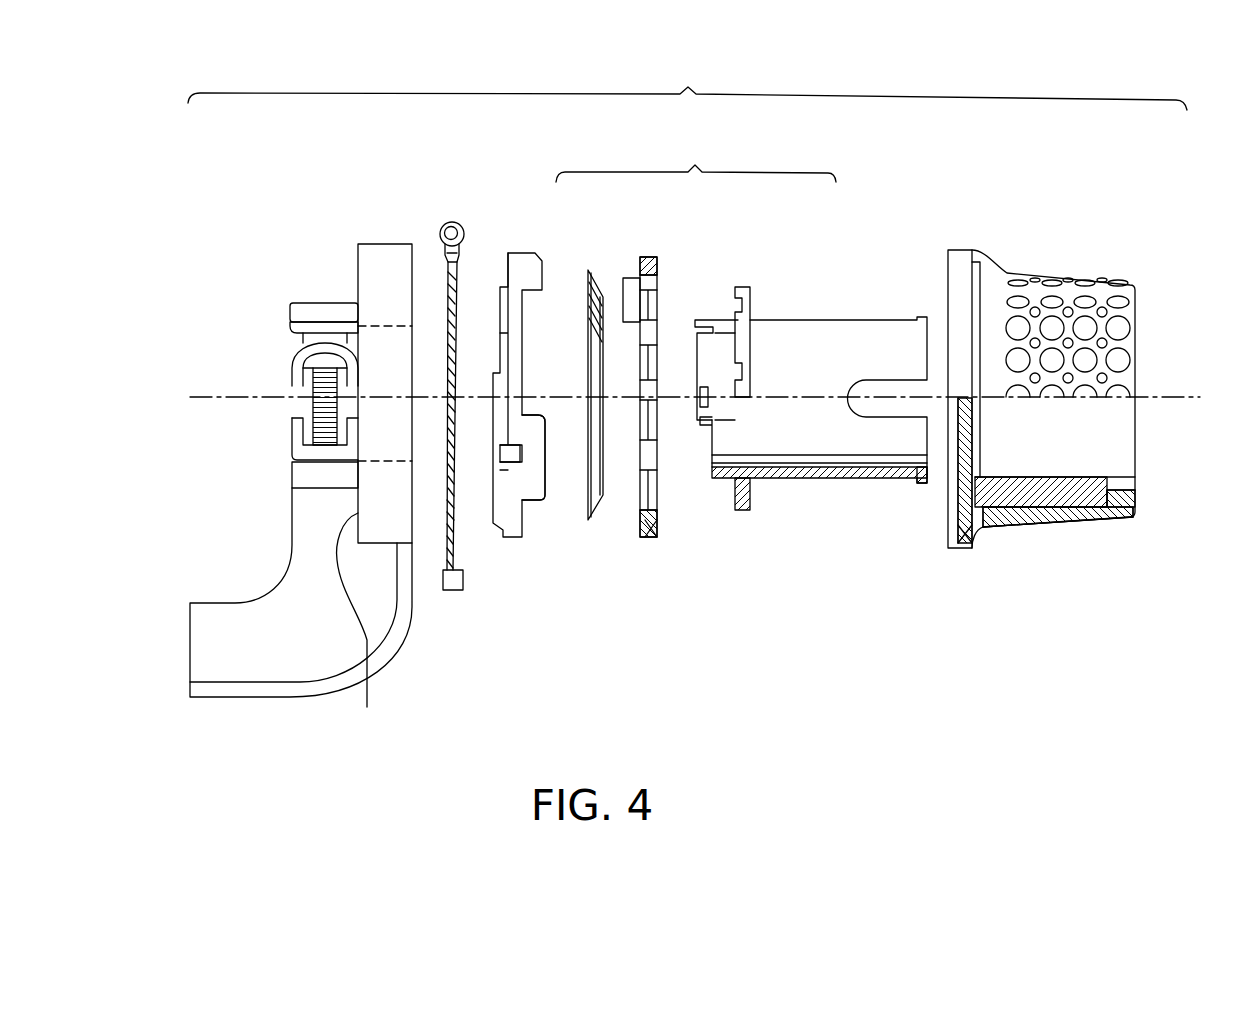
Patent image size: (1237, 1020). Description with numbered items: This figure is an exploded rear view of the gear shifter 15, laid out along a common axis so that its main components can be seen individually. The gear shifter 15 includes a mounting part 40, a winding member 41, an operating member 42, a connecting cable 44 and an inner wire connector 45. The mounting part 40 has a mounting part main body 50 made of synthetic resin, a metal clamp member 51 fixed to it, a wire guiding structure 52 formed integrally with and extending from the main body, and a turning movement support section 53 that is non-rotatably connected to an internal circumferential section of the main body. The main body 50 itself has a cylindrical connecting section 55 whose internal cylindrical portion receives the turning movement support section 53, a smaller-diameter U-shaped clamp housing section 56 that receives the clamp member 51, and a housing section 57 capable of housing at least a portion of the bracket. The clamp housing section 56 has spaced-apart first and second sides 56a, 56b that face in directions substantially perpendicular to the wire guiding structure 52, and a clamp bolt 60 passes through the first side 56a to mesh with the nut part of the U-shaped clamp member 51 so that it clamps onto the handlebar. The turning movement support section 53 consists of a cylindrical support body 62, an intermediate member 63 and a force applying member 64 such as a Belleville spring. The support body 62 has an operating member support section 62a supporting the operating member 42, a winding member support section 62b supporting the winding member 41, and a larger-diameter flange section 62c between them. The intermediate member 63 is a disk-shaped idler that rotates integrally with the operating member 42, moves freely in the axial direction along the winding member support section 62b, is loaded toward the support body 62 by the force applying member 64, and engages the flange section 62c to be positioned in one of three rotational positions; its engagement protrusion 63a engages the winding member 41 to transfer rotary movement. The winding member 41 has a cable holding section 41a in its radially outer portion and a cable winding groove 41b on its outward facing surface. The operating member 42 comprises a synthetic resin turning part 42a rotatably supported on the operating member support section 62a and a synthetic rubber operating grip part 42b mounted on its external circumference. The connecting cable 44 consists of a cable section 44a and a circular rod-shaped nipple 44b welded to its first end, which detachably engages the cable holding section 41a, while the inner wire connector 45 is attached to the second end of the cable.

The gear shifter 15 is at (687, 80).
The mounting part 40 is at (343, 218).
The winding member 41 is at (525, 252).
The cable holding section 41a is at (511, 470).
The cable winding groove 41b is at (503, 417).
The operating member 42 is at (1063, 262).
The turning part 42a is at (1100, 478).
The operating grip part 42b is at (1102, 513).
The connecting cable 44 is at (464, 533).
The cable section 44a is at (458, 490).
The nipple 44b is at (447, 592).
The inner wire connector 45 is at (458, 226).
The mounting part main body 50 is at (388, 243).
The metal clamp member 51 is at (292, 366).
The wire guiding structure 52 is at (318, 698).
The turning movement support section 53 is at (696, 157).
The cylindrical connecting section 55 is at (403, 247).
The U-shaped clamp housing section 56 is at (300, 302).
The first side 56a is at (335, 310).
The second side 56b is at (305, 482).
The housing section 57 is at (368, 707).
The clamp bolt 60 is at (317, 403).
The cylindrical support body 62 is at (785, 307).
The operating member support section 62a is at (848, 323).
The winding member support section 62b is at (703, 318).
The larger-diameter flange section 62c is at (743, 288).
The intermediate member 63 is at (648, 255).
The engagement protrusion 63a is at (633, 278).
The force applying member 64 is at (587, 268).